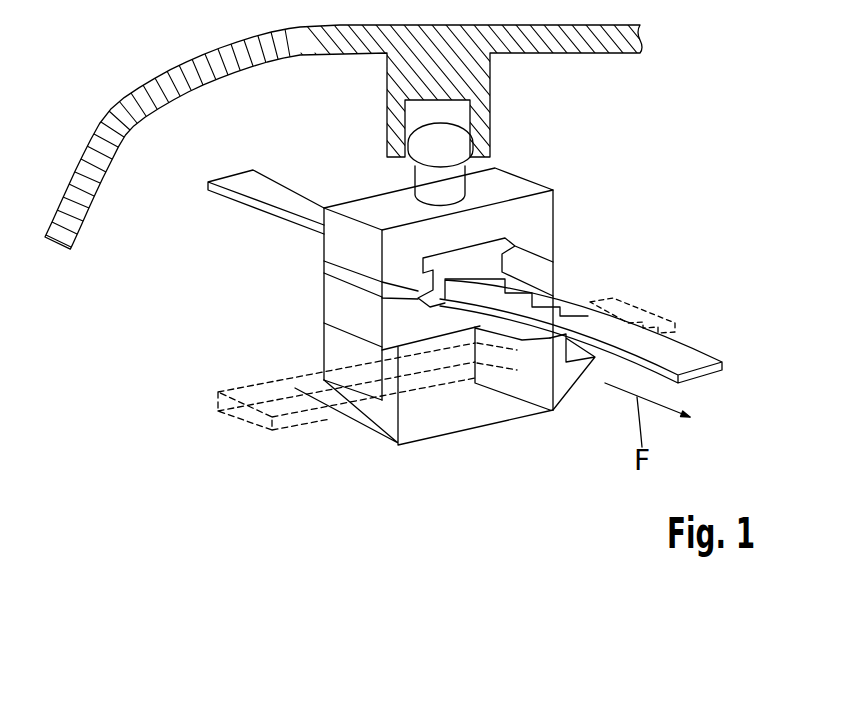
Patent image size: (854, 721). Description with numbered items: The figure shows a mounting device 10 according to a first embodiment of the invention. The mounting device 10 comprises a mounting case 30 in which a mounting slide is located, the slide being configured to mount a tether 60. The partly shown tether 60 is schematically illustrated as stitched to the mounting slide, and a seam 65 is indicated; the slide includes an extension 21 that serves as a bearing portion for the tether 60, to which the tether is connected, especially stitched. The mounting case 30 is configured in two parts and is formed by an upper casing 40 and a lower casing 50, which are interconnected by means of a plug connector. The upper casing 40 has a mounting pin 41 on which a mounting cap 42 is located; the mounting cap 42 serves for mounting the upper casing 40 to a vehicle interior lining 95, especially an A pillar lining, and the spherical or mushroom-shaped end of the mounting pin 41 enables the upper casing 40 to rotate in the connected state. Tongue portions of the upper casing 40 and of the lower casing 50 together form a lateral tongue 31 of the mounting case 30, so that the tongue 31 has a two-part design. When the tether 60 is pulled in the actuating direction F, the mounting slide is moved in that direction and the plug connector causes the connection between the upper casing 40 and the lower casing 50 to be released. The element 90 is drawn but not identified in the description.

The mounting device 10 is at (550, 148).
The extension 21 is at (523, 338).
The mounting case 30 is at (558, 183).
The tongue 31 is at (345, 257).
The upper casing 40 is at (345, 245).
The mounting pin 41 is at (426, 181).
The mounting cap 42 is at (426, 136).
The lower casing 50 is at (335, 314).
The tether 60 is at (694, 361).
The seam 65 is at (568, 305).
The carrier strip 90 is at (297, 420).
The vehicle interior lining 95 is at (148, 82).